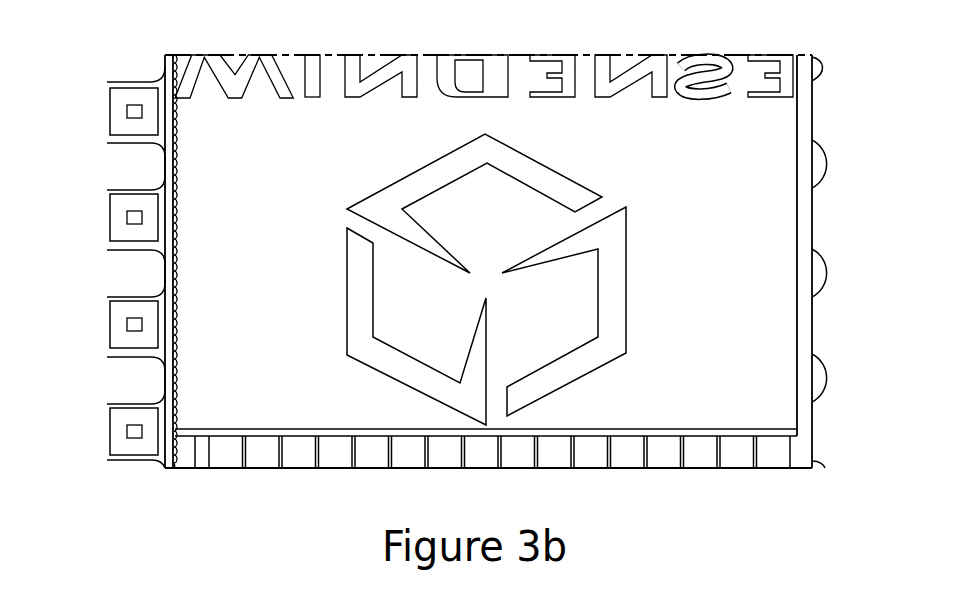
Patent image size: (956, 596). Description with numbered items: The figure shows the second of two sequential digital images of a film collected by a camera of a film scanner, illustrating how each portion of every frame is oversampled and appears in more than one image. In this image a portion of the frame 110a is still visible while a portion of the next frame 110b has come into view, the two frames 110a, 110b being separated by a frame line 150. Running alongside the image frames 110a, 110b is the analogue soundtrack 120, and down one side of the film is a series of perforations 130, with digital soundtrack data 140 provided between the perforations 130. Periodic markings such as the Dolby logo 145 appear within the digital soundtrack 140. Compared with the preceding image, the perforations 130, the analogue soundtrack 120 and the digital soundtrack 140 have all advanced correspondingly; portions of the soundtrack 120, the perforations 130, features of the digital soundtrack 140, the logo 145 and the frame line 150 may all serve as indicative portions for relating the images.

The frame 110a is at (677, 60).
The next frame 110b is at (553, 462).
The analogue soundtrack 120 is at (163, 65).
The perforations 130 is at (137, 65).
The digital soundtrack data 140 is at (117, 97).
The Dolby logo 145 is at (137, 110).
The frame line 150 is at (813, 433).